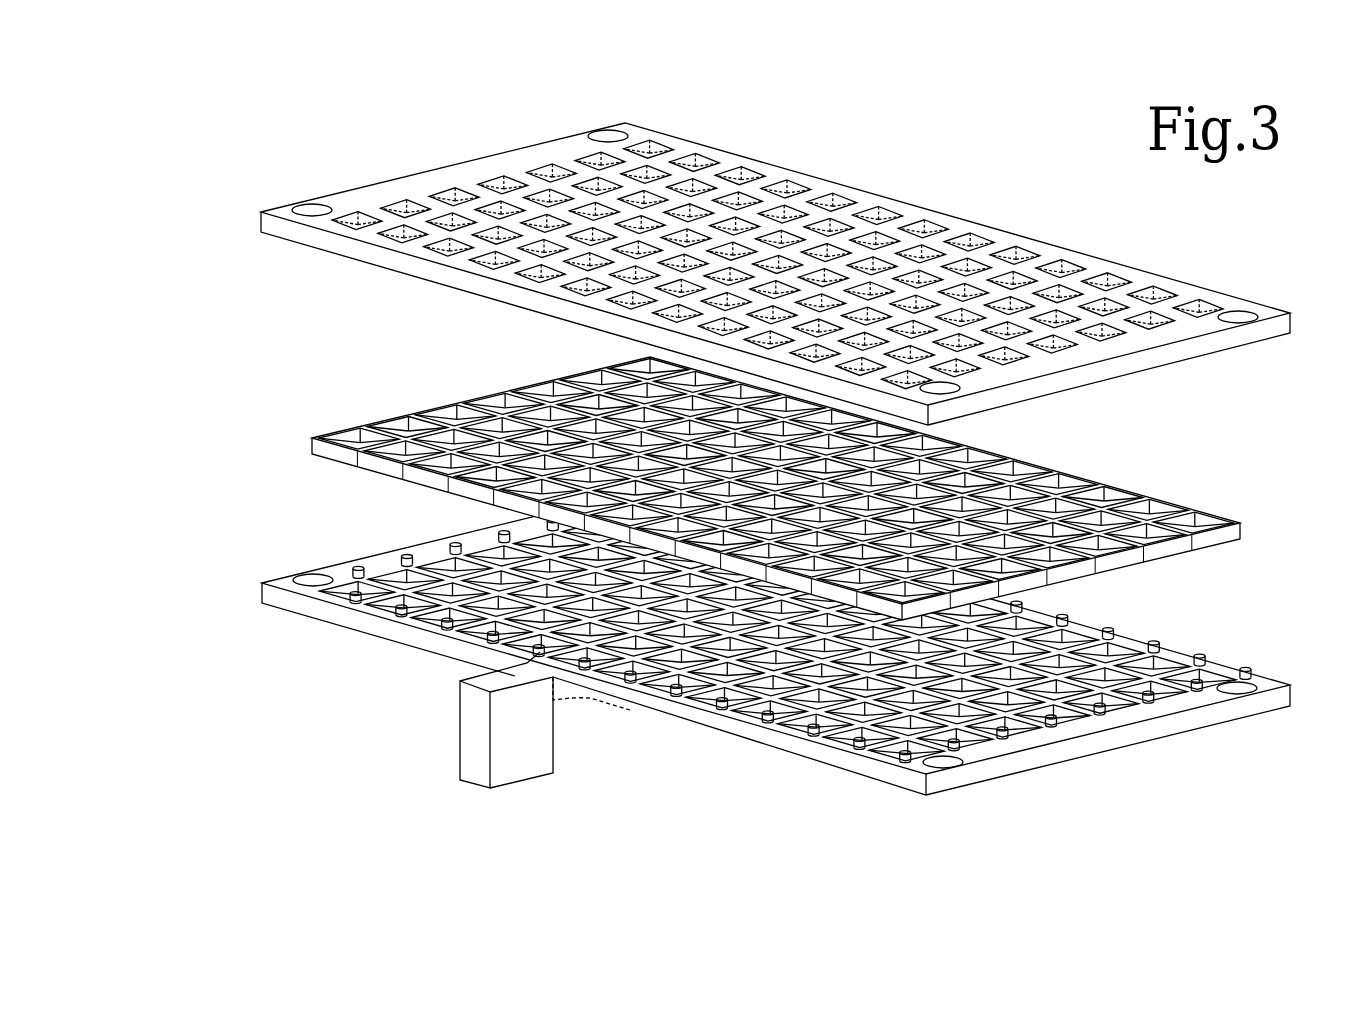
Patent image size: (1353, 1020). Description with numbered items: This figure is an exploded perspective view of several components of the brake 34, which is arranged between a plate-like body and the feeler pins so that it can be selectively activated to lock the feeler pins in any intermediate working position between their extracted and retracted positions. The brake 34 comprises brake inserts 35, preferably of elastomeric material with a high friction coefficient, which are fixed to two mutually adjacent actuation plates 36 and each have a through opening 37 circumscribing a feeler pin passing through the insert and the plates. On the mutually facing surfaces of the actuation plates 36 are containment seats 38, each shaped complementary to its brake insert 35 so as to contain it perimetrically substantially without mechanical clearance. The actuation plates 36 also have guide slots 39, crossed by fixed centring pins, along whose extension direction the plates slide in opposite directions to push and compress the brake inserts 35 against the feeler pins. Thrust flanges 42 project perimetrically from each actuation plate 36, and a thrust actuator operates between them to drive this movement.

The brake 34 is at (300, 417).
The brake inserts 35 is at (835, 593).
The actuation plates 36 is at (640, 128).
The through opening 37 is at (1062, 510).
The containment seats 38 is at (393, 578).
The guide slots 39 is at (312, 206).
The thrust flanges 42 is at (477, 737).